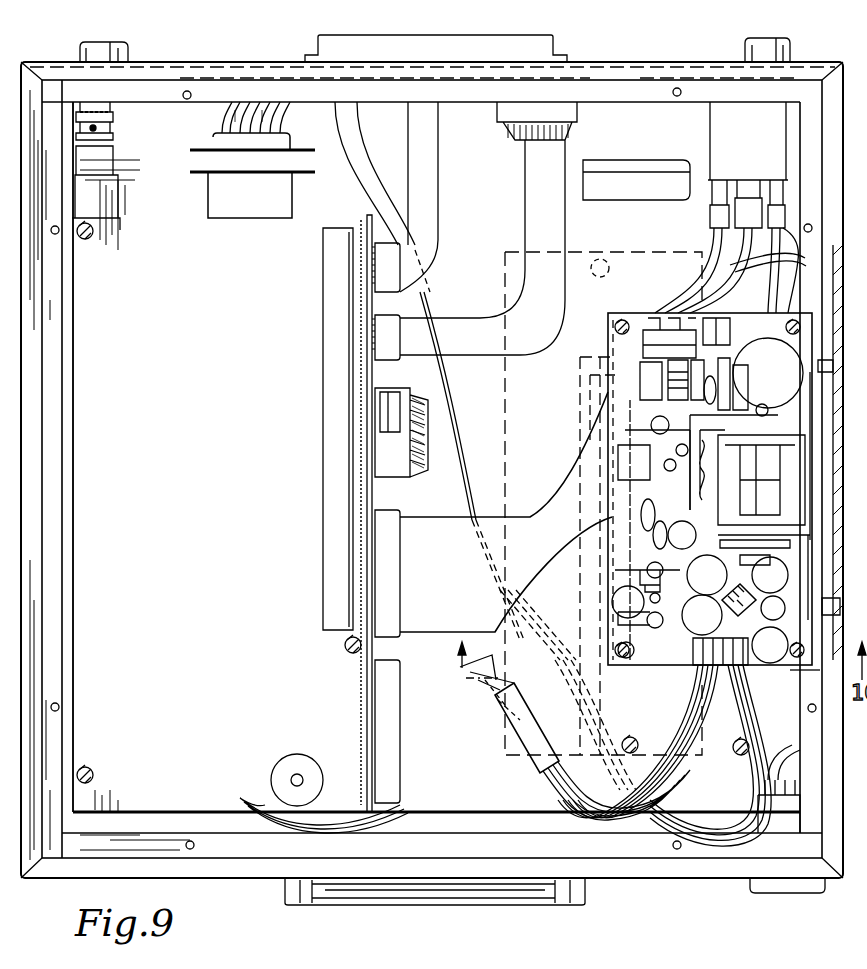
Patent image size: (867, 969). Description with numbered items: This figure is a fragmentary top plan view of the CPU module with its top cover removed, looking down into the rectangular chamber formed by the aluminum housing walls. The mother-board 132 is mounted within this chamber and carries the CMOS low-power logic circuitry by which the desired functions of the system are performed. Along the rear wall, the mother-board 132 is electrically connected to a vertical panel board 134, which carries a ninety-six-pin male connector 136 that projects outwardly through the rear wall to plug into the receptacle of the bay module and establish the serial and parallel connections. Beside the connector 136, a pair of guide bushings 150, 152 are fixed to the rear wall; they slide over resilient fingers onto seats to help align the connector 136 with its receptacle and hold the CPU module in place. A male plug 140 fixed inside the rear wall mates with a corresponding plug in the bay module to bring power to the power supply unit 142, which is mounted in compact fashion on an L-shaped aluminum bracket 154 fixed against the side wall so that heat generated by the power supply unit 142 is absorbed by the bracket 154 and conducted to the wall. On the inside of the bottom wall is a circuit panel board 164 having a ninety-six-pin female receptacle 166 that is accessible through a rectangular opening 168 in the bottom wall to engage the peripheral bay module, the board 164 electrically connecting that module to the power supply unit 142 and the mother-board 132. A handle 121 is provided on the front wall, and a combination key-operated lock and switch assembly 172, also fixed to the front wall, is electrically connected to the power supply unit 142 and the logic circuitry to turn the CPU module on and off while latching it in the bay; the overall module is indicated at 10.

The apparatus 10 is at (475, 673).
The handle 121 is at (540, 895).
The mother-board 132 is at (194, 641).
The vertical panel board 134 is at (607, 68).
The 96-pin male connector 136 is at (445, 38).
The male plug 140 is at (766, 139).
The power supply unit 142 is at (593, 328).
The guide bushing 150 is at (755, 37).
The guide bushing 152 is at (128, 50).
The L-shaped aluminum bracket 154 is at (795, 672).
The circuit panel board 164 is at (505, 402).
The 96-pin female receptacle 166 is at (590, 390).
The rectangular opening 168 is at (580, 357).
The key operated lock and switch assembly 172 is at (760, 895).